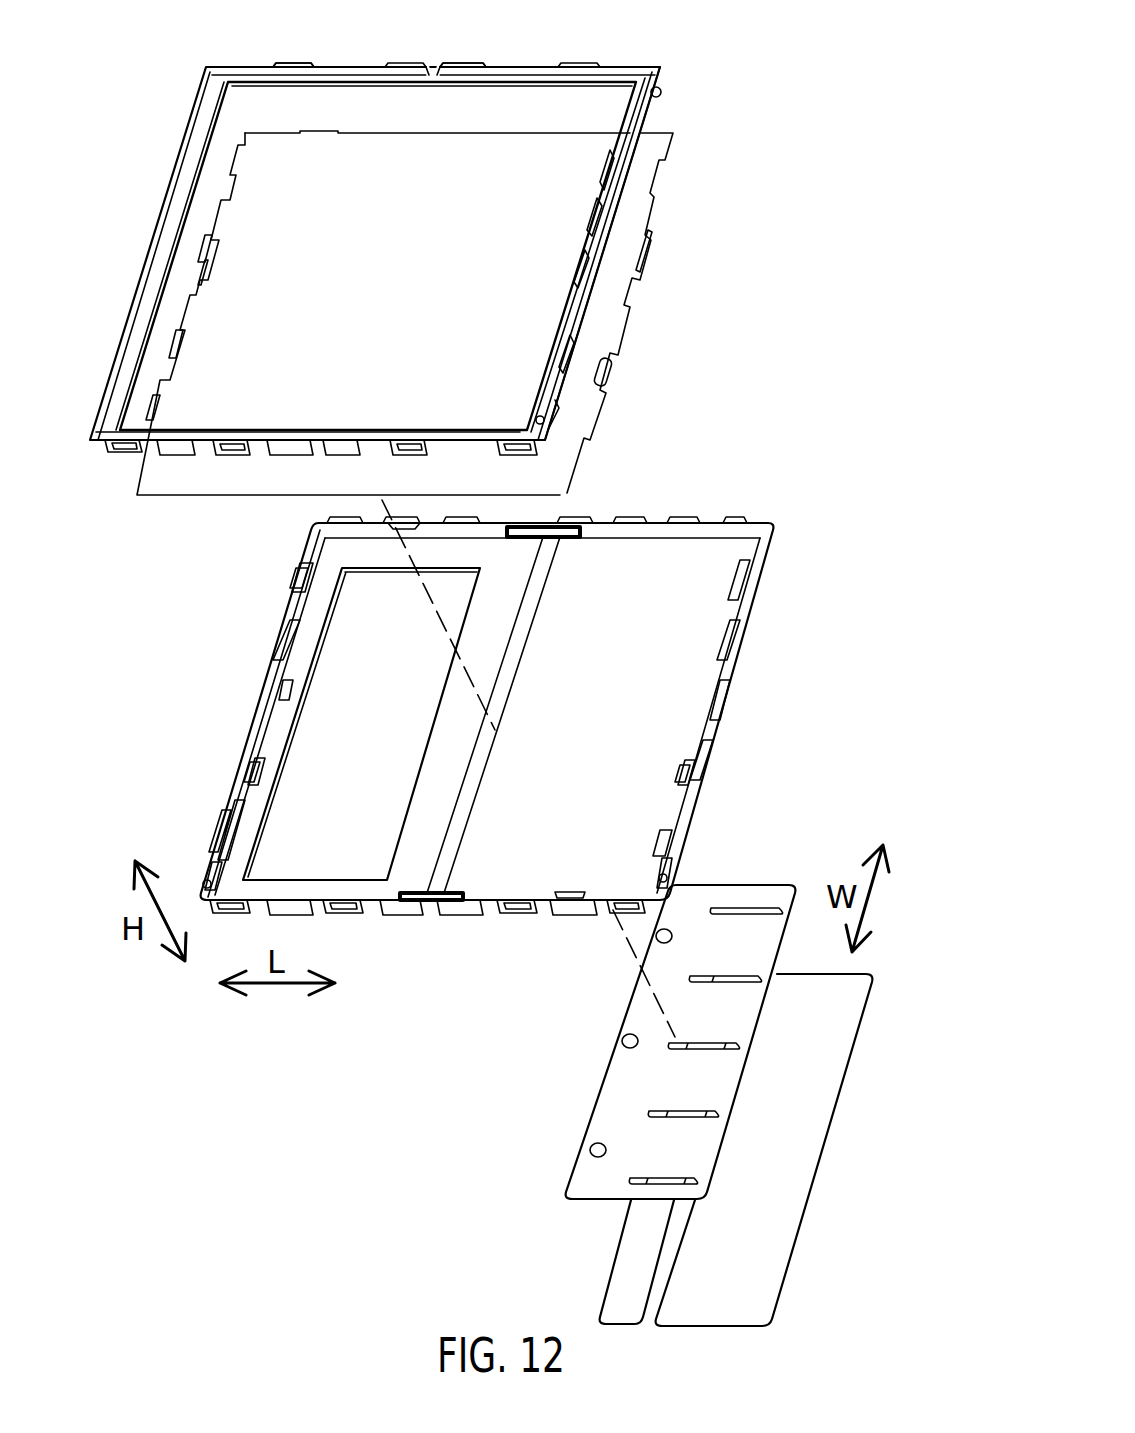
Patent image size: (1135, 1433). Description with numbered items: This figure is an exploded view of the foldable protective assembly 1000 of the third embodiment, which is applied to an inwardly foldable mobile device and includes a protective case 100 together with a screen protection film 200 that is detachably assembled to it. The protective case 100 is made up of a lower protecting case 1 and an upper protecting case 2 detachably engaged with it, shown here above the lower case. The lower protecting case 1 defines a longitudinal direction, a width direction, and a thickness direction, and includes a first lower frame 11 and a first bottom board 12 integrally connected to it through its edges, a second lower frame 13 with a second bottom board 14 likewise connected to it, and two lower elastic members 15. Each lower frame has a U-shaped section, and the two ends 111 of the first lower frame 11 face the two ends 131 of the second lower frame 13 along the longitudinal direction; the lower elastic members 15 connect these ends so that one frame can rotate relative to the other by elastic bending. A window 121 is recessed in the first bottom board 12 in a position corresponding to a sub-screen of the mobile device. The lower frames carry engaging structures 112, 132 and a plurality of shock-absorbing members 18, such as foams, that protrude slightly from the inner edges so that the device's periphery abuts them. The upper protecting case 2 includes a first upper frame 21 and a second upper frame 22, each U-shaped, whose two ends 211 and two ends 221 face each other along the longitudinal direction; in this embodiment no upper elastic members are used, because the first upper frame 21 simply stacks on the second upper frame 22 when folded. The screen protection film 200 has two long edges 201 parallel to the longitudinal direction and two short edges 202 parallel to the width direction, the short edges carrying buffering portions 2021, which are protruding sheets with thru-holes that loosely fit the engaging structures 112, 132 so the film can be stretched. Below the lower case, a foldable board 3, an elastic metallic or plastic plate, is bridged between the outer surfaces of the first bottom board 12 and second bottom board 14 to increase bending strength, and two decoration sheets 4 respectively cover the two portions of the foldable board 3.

The foldable protective assembly 1000 is at (930, 21).
The protective case 100 is at (922, 84).
The lower protecting case 1 is at (476, 714).
The upper protecting case 2 is at (411, 228).
The foldable board 3 is at (597, 1070).
The decoration sheets 4 is at (680, 1272).
The first lower frame 11 is at (214, 834).
The first bottom board 12 is at (484, 650).
The second lower frame 13 is at (733, 694).
The second bottom board 14 is at (692, 644).
The lower elastic members 15 is at (566, 542).
The shock-absorbing members 18 is at (310, 578).
The first upper frame 21 is at (188, 128).
The second upper frame 22 is at (658, 122).
The ends of the first lower frame 111 is at (398, 912).
The engaging structures 112 is at (246, 770).
The window 121 is at (300, 700).
The ends of the second lower frame 131 is at (465, 912).
The engaging structures 132 is at (692, 772).
The screen protection film 200 is at (439, 352).
The long edges 201 is at (172, 504).
The short edges 202 is at (641, 313).
The buffering portions 2021 is at (612, 378).
The ends of the first upper frame 211 is at (412, 66).
The ends of the second upper frame 221 is at (470, 66).